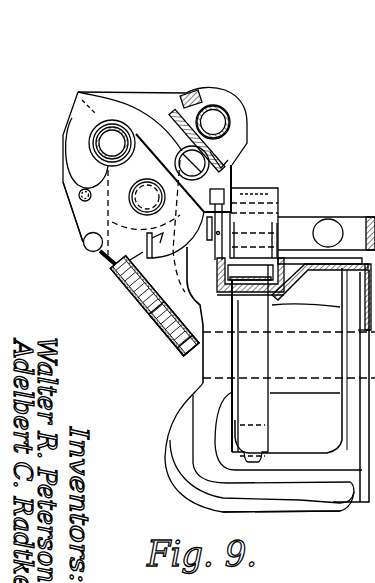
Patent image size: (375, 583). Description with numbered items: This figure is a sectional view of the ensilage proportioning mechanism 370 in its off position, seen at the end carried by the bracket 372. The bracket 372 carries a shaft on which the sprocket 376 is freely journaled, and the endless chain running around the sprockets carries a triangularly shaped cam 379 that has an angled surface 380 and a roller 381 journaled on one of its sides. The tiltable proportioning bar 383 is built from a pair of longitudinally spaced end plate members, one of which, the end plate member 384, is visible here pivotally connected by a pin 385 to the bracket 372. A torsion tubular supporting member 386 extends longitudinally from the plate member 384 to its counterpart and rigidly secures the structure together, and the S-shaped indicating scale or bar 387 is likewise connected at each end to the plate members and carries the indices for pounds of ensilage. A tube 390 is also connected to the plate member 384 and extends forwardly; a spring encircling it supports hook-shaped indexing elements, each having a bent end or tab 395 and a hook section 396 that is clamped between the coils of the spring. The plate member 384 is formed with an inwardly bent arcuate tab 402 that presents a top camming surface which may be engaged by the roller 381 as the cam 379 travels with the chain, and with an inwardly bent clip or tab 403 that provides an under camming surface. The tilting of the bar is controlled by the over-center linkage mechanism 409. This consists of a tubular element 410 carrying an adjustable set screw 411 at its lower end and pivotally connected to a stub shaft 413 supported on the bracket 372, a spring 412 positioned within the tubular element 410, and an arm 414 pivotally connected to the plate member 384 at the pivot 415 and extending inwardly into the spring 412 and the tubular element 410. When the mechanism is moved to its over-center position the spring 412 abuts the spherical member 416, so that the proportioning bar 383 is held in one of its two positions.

The ensilage proportioning mechanism 370 is at (120, 78).
The bracket 372 is at (314, 513).
The sprocket 376 is at (266, 427).
The triangularly shaped cam 379 is at (281, 195).
The angled surface 380 is at (279, 188).
The roller 381 is at (205, 227).
The tiltable proportioning bar 383 is at (72, 118).
The end plate member 384 is at (78, 195).
The pin 385 is at (132, 203).
The torsion tubular supporting member 386 is at (229, 118).
The S-shaped indicating scale or bar 387 is at (200, 108).
The tube 390 is at (100, 144).
The bent end or tab 395 is at (225, 170).
The hook section 396 is at (132, 106).
The inwardly bent arcuate tab 402 is at (147, 202).
The inwardly bent clip or tab 403 is at (242, 190).
The over-center linkage mechanism 409 is at (163, 357).
The tubular element 410 is at (152, 318).
The adjustable set screw 411 is at (186, 362).
The spring 412 is at (112, 273).
The stub shaft 413 is at (108, 290).
The arm 414 is at (147, 238).
The pivotal connection 415 is at (83, 246).
The spherical member 416 is at (103, 256).